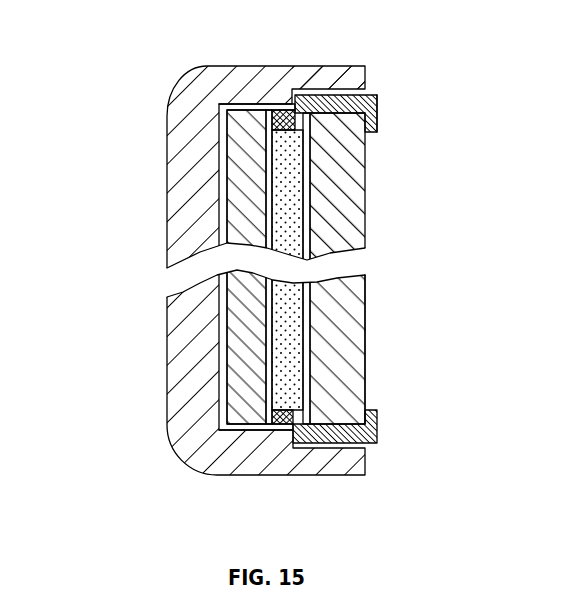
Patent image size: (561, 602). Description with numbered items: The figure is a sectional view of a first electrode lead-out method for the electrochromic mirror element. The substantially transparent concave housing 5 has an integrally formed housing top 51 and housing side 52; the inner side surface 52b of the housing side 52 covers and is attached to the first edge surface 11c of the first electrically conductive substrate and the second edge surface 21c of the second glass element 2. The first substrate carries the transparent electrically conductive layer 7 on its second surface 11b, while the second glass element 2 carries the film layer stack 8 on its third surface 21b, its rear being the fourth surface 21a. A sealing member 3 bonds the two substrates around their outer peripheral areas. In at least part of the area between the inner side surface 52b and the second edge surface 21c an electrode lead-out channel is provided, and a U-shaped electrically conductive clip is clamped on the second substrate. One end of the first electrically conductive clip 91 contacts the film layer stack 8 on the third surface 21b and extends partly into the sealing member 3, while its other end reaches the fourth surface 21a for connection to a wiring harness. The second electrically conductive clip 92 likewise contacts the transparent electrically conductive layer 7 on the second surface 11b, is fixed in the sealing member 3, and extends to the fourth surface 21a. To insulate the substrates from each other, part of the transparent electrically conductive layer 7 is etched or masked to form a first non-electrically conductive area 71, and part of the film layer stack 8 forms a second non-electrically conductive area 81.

The concave housing 5 is at (65, 155).
The housing top 51 is at (195, 225).
The housing side 52 is at (265, 92).
The inner side surface 52b is at (335, 85).
The sealing member 3 is at (290, 433).
The first edge surface 11c is at (222, 105).
The second surface 11b is at (225, 345).
The second electrically conductive clip 92 is at (375, 93).
The first electrically conductive clip 91 is at (377, 425).
The second non-electrically conductive area 81 is at (290, 125).
The first non-electrically conductive area 71 is at (270, 412).
The transparent electrically conductive layer 7 is at (245, 300).
The film layer stack 8 is at (308, 248).
The second glass element 2 is at (350, 340).
The second edge surface 21c is at (372, 104).
The third surface 21b is at (363, 282).
The fourth surface 21a is at (366, 382).